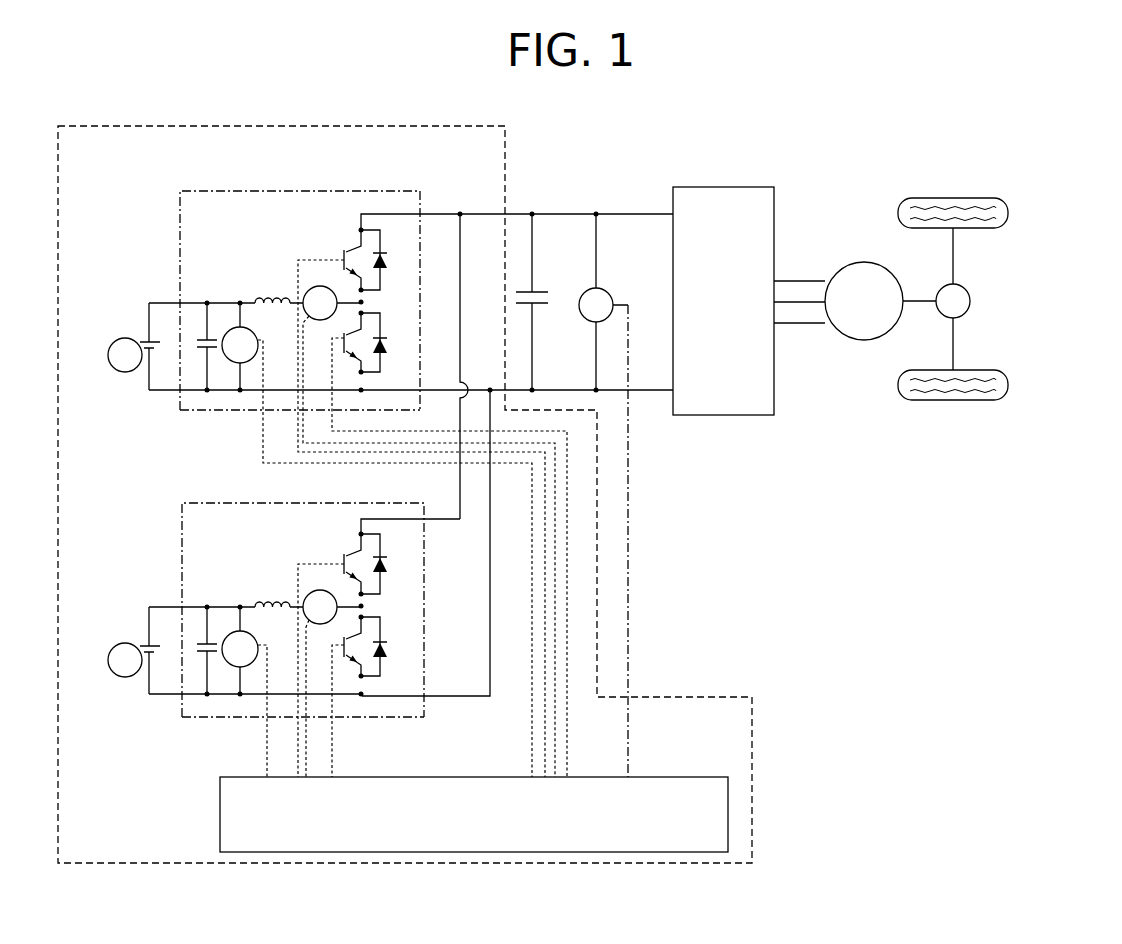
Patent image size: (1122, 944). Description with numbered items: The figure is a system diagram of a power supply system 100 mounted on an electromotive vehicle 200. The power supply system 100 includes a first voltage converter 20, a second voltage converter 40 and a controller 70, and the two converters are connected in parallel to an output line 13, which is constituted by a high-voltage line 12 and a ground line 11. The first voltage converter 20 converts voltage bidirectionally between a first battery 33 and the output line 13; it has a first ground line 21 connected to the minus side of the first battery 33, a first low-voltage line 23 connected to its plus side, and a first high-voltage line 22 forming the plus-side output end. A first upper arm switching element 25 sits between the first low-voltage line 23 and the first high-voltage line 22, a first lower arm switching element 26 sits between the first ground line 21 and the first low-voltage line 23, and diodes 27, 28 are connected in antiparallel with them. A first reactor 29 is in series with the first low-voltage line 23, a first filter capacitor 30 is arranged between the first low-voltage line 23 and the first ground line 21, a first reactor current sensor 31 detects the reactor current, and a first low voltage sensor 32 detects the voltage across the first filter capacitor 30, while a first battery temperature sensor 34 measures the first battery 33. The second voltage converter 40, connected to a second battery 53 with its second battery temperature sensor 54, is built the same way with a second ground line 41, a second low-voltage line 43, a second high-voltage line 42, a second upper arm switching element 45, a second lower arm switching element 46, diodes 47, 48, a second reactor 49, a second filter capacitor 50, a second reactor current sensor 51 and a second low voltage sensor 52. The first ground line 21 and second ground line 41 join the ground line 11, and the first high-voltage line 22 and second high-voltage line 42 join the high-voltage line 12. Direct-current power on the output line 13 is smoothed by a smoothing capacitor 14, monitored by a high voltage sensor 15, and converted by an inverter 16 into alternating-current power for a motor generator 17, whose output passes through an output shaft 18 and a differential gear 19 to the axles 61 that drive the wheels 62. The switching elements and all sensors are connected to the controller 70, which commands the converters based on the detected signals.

The power supply system 100 is at (716, 697).
The electromotive vehicle 200 is at (1058, 285).
The ground line 11 is at (497, 388).
The high-voltage line 12 is at (490, 214).
The output line 13 is at (524, 207).
The smoothing capacitor 14 is at (545, 290).
The high voltage sensor 15 is at (610, 292).
The inverter 16 is at (722, 187).
The motor generator 17 is at (866, 262).
The output shaft 18 is at (922, 298).
The differential gear 19 is at (972, 299).
The axles 61 is at (962, 258).
The wheels 62 is at (958, 198).
The first voltage converter 20 is at (368, 190).
The first ground line 21 is at (226, 393).
The first high-voltage line 22 is at (395, 213).
The first low-voltage line 23 is at (220, 302).
The first upper arm switching element 25 is at (320, 256).
The first lower arm switching element 26 is at (352, 343).
The diode 27 is at (390, 262).
The diode 28 is at (390, 345).
The first reactor 29 is at (275, 310).
The first filter capacitor 30 is at (200, 340).
The first reactor current sensor 31 is at (318, 286).
The first low voltage sensor 32 is at (242, 300).
The first battery 33 is at (143, 341).
The first battery temperature sensor 34 is at (125, 372).
The second voltage converter 40 is at (187, 722).
The second ground line 41 is at (226, 698).
The second high-voltage line 42 is at (388, 519).
The second low-voltage line 43 is at (220, 606).
The second upper arm switching element 45 is at (336, 562).
The second lower arm switching element 46 is at (354, 662).
The diode 47 is at (390, 567).
The diode 48 is at (390, 650).
The second reactor 49 is at (275, 614).
The second filter capacitor 50 is at (200, 644).
The second reactor current sensor 51 is at (318, 590).
The second low voltage sensor 52 is at (242, 604).
The second battery 53 is at (143, 645).
The second battery temperature sensor 54 is at (125, 677).
The controller 70 is at (677, 776).